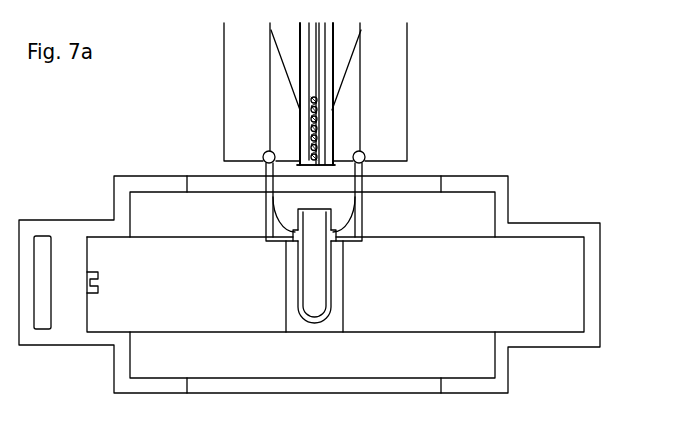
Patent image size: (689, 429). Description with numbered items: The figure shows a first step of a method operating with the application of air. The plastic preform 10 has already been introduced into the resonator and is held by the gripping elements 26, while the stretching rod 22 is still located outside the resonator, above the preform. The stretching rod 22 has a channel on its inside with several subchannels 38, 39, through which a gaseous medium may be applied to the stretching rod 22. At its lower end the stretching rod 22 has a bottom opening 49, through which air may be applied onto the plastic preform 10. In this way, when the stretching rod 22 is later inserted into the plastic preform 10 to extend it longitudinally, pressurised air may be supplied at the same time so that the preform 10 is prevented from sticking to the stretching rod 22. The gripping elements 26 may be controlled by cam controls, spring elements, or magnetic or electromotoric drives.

The stretching rod 22 is at (322, 58).
The subchannel 38 is at (323, 117).
The subchannel 39 is at (324, 141).
The bottom opening 49 is at (297, 166).
The gripping element 26 is at (360, 200).
The plastic preform 10 is at (313, 267).